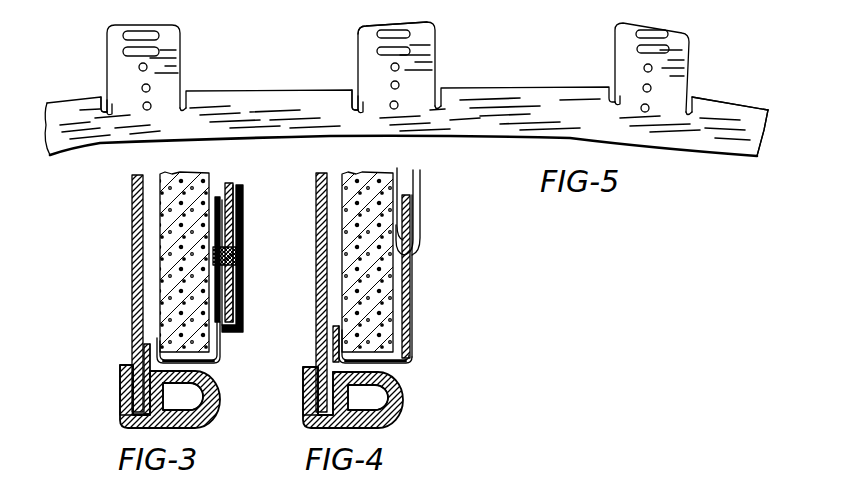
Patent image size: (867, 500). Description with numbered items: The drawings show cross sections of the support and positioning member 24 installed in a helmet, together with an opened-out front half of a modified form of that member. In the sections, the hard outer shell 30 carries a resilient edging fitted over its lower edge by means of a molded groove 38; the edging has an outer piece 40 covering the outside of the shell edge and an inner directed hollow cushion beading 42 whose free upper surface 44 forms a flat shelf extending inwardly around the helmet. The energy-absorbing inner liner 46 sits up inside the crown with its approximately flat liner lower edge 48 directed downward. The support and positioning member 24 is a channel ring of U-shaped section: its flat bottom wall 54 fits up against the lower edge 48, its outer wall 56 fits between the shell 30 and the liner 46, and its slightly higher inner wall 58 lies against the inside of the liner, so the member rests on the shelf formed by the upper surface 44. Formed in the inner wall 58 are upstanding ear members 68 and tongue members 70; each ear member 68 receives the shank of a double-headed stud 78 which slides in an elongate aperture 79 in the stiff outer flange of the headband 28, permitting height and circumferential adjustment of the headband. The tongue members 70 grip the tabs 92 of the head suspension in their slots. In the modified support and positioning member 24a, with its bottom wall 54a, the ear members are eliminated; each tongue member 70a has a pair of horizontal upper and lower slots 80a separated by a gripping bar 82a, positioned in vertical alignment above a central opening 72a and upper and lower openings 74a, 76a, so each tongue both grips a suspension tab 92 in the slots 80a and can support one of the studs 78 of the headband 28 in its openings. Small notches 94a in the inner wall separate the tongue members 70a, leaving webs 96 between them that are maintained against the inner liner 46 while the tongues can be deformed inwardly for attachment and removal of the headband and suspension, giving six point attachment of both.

In FIG. 3, the support and positioning member 24 is at (224, 341).
In FIG. 4, the support and positioning member 24 is at (414, 340).
In FIG. 5, the alternate support and positioning member 24a is at (718, 98).
In FIG. 3, the headband 28 is at (231, 183).
In FIG. 3, the outer shell 30 is at (132, 259).
In FIG. 4, the outer shell 30 is at (318, 245).
In FIG. 3, the groove 38 is at (123, 416).
In FIG. 4, the groove 38 is at (306, 416).
In FIG. 3, the outer piece 40 is at (120, 390).
In FIG. 4, the outer piece 40 is at (305, 398).
In FIG. 3, the beading 42 is at (220, 418).
In FIG. 4, the beading 42 is at (403, 420).
In FIG. 3, the free upper surface 44 is at (150, 358).
In FIG. 4, the free upper surface 44 is at (392, 368).
In FIG. 3, the inner liner 46 is at (180, 213).
In FIG. 4, the inner liner 46 is at (393, 272).
In FIG. 3, the liner lower edge 48 is at (222, 356).
In FIG. 4, the liner lower edge 48 is at (410, 352).
In FIG. 3, the bottom wall 54 is at (205, 368).
In FIG. 4, the bottom wall 54 is at (394, 365).
In FIG. 5, the bottom wall 54a is at (733, 156).
In FIG. 3, the outer wall 56 is at (144, 339).
In FIG. 4, the outer wall 56 is at (333, 338).
In FIG. 3, the inner wall 58 is at (238, 284).
In FIG. 4, the inner wall 58 is at (411, 311).
In FIG. 3, the ear member 68 is at (217, 197).
In FIG. 4, the tongue member 70 is at (397, 170).
In FIG. 5, the tongue member 70a is at (176, 40).
In FIG. 5, the central opening 72a is at (399, 84).
In FIG. 5, the upper opening 74a is at (399, 66).
In FIG. 5, the lower opening 76a is at (398, 108).
In FIG. 3, the double-headed stud 78 is at (244, 226).
In FIG. 3, the elongate aperture 79 is at (230, 262).
In FIG. 5, the slots 80a is at (413, 52).
In FIG. 5, the gripping bar 82a is at (375, 44).
In FIG. 4, the tab 92 is at (421, 226).
In FIG. 5, the notch 94a is at (187, 100).
In FIG. 5, the web 96 is at (245, 90).